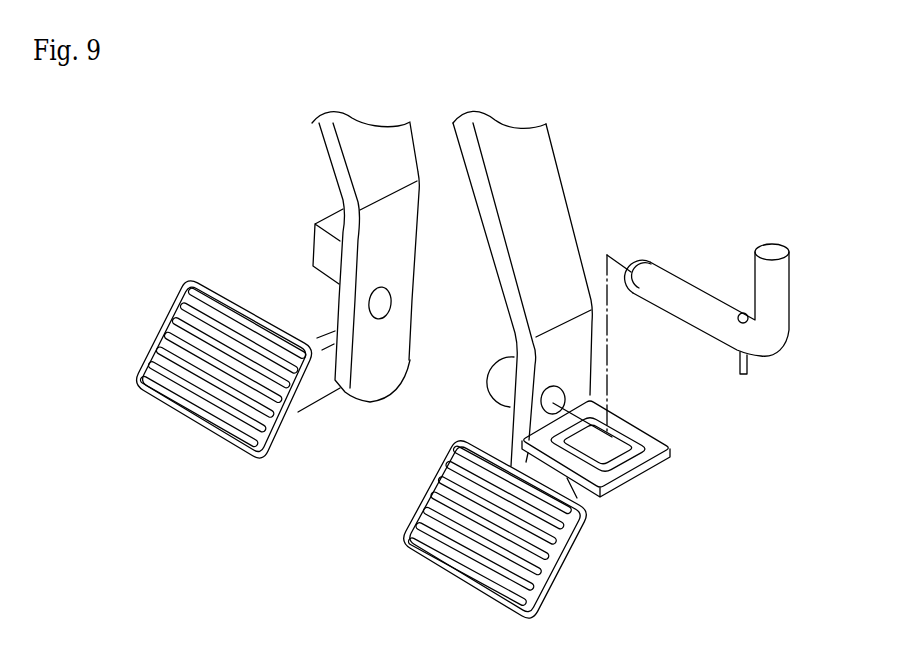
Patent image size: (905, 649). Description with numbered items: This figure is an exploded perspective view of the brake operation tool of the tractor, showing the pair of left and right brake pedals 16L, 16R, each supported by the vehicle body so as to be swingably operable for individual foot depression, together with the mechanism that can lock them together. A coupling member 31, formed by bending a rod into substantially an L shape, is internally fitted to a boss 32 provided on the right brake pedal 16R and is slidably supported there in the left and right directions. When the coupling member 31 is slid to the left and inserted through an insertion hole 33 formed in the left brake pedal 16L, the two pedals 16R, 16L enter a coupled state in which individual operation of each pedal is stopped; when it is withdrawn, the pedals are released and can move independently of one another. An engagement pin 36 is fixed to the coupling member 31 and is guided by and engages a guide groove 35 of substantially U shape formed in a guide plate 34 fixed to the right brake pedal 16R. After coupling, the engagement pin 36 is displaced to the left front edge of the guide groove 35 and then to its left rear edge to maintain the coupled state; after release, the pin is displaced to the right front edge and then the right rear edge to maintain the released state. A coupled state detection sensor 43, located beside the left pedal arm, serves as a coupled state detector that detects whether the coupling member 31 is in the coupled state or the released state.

The left brake pedal 16L is at (152, 352).
The right brake pedal 16R is at (418, 514).
The coupling member 31 is at (679, 285).
The boss 32 is at (500, 394).
The insertion hole 33 is at (383, 303).
The guide plate 34 is at (625, 485).
The guide groove 35 is at (627, 447).
The engagement pin 36 is at (738, 365).
The coupled state detection sensor 43 is at (315, 228).